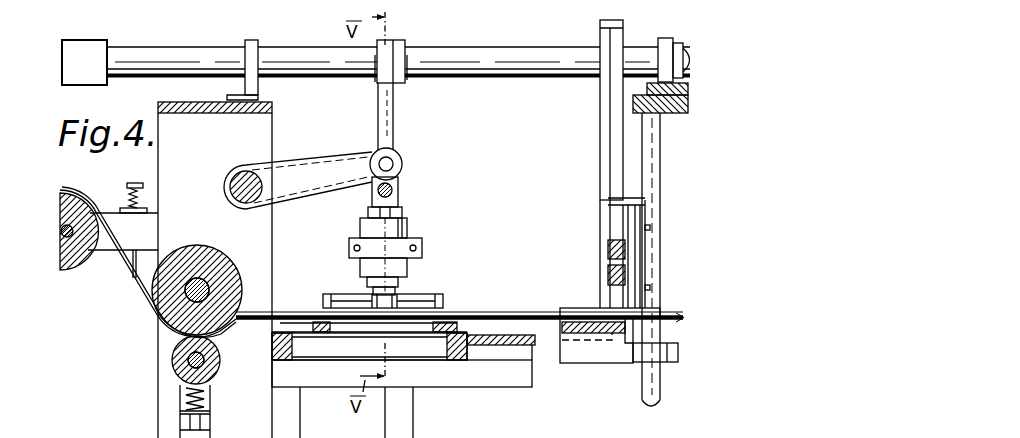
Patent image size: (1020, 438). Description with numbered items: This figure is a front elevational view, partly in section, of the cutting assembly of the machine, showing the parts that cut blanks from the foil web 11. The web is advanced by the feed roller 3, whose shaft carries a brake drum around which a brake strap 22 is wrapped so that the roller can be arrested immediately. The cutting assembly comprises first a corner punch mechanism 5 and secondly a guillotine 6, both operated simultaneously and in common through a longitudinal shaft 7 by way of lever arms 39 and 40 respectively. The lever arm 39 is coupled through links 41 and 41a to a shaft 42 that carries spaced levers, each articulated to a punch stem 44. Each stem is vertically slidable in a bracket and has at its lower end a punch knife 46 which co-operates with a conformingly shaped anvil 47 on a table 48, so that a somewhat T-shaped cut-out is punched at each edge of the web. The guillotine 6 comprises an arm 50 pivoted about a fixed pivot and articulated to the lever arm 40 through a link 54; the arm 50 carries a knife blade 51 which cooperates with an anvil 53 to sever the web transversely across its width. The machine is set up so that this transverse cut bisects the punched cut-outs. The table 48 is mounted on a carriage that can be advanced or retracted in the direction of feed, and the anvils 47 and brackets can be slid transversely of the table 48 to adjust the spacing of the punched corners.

The feed roller 3 is at (222, 262).
The corner punch mechanism 5 is at (409, 225).
The guillotine 6 is at (606, 243).
The longitudinal shaft 7 is at (340, 68).
The foil web 11 is at (456, 328).
The brake strap 22 is at (157, 343).
The lever arm 39 is at (375, 78).
The lever arm 40 is at (598, 45).
The link 41 is at (394, 118).
The link 41a is at (315, 165).
The shaft 42 is at (246, 171).
The punch stem 44 is at (372, 210).
The punch knife 46 is at (351, 297).
The anvil 47 is at (440, 334).
The table 48 is at (498, 378).
The arm 50 is at (606, 278).
The knife blade 51 is at (625, 280).
The anvil 53 is at (622, 333).
The link 54 is at (600, 105).